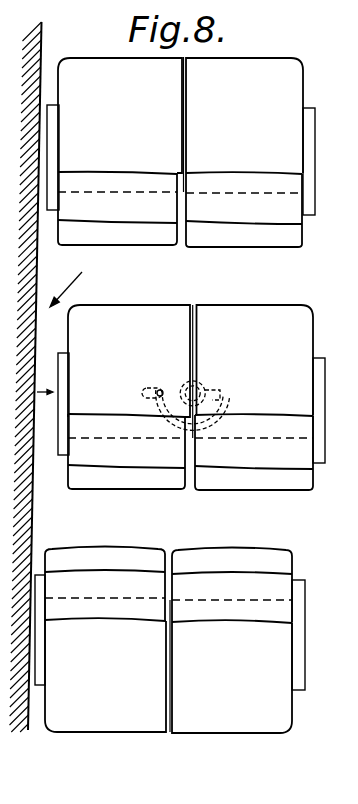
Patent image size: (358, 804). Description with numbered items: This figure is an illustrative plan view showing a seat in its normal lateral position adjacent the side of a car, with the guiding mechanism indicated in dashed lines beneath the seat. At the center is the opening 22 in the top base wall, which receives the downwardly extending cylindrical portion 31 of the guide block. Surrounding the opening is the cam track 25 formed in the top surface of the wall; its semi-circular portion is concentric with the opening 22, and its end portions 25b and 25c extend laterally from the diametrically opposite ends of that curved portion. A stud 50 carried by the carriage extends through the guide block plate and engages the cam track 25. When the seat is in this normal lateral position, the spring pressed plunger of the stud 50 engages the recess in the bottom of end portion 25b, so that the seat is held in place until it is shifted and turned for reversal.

The opening 22 is at (203, 383).
The cylindrical portion 31 is at (207, 386).
The cam track 25 is at (230, 404).
The end portion of cam track 25b is at (145, 388).
The end portion of cam track 25c is at (222, 390).
The stud 50 is at (161, 390).